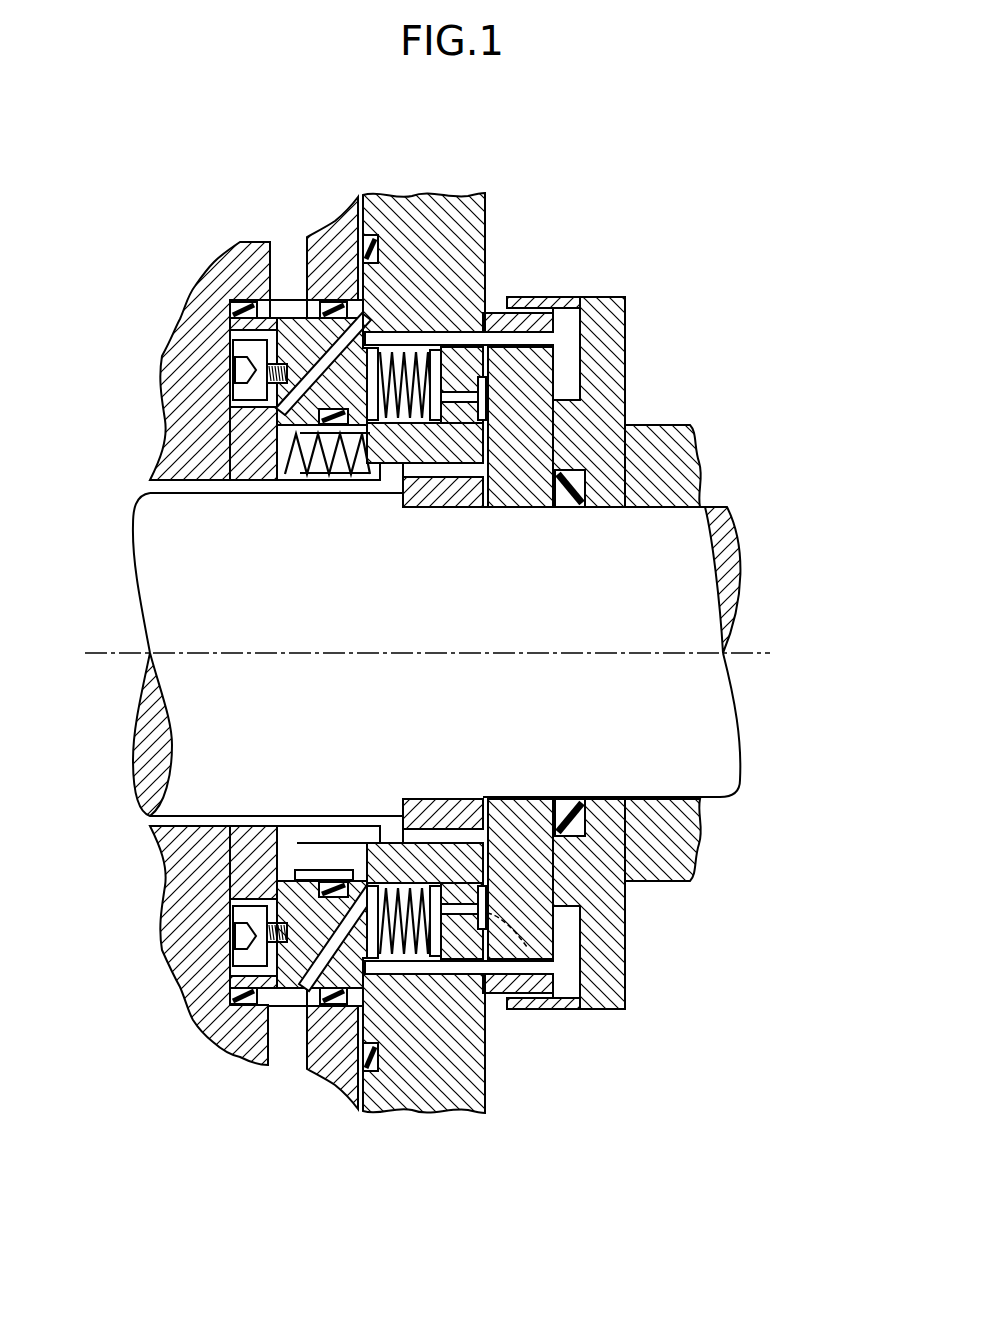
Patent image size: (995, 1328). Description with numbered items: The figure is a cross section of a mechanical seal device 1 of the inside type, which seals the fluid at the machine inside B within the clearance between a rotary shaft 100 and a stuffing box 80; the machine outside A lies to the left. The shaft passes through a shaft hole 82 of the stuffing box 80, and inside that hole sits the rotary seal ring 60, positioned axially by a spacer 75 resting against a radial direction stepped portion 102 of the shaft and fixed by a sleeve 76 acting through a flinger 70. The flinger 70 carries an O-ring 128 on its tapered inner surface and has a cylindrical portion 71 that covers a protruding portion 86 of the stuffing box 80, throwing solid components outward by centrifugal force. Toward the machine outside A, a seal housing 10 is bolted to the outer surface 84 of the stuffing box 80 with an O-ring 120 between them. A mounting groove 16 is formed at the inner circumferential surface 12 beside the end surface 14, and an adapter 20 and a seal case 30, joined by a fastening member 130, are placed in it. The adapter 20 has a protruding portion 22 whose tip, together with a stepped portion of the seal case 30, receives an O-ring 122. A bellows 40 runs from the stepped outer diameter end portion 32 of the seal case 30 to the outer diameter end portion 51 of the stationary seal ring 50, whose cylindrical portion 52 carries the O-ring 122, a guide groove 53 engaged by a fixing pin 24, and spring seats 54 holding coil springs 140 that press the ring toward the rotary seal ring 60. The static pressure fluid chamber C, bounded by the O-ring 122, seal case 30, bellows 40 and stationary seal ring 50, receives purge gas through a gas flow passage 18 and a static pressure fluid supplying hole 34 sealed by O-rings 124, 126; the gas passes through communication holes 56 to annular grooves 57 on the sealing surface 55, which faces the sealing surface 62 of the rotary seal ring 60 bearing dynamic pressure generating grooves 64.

The mechanical seal device 1 is at (708, 288).
The machine outside A is at (82, 285).
The machine inside B is at (835, 285).
The static pressure fluid chamber C is at (412, 500).
The seal housing 10 is at (205, 300).
The inner circumferential surface 12 is at (200, 817).
The end surface 14 is at (375, 1111).
The mounting groove 16 is at (287, 1006).
The gas flow passage 18 is at (298, 257).
The adapter 20 is at (232, 455).
The protruding portion 22 is at (317, 481).
The fixing pin 24 is at (292, 868).
The seal case 30 is at (232, 335).
The stepped outer diameter end portion 32 is at (382, 466).
The static pressure fluid supplying hole 34 is at (280, 318).
The bellows 40 is at (420, 857).
The stationary seal ring 50 is at (460, 850).
The outer diameter end portion 51 is at (450, 425).
The cylindrical portion 52 is at (388, 845).
The guide groove 53 is at (362, 887).
The spring seat 54 is at (340, 478).
The sealing surface 55 is at (488, 450).
The communication holes 56 is at (462, 509).
The annular grooves 57 is at (478, 480).
The rotary seal ring 60 is at (512, 452).
The sealing surface 62 is at (488, 994).
The dynamic pressure generating grooves 64 is at (545, 1010).
The flinger 70 is at (603, 478).
The cylindrical portion 71 is at (590, 297).
The spacer 75 is at (492, 800).
The sleeve 76 is at (662, 480).
The stuffing box 80 is at (487, 196).
The shaft hole 82 is at (492, 312).
The outer surface 84 is at (352, 200).
The protruding portion 86 is at (540, 297).
The rotary shaft 100 is at (723, 733).
The radial direction stepped portion 102 is at (402, 500).
The O-ring 120 is at (380, 240).
The O-ring 122 is at (334, 883).
The O-ring 124 is at (238, 302).
The O-ring 126 is at (336, 302).
The O-ring 128 is at (569, 800).
The fastening member 130 is at (235, 372).
The coil springs 140 is at (283, 481).